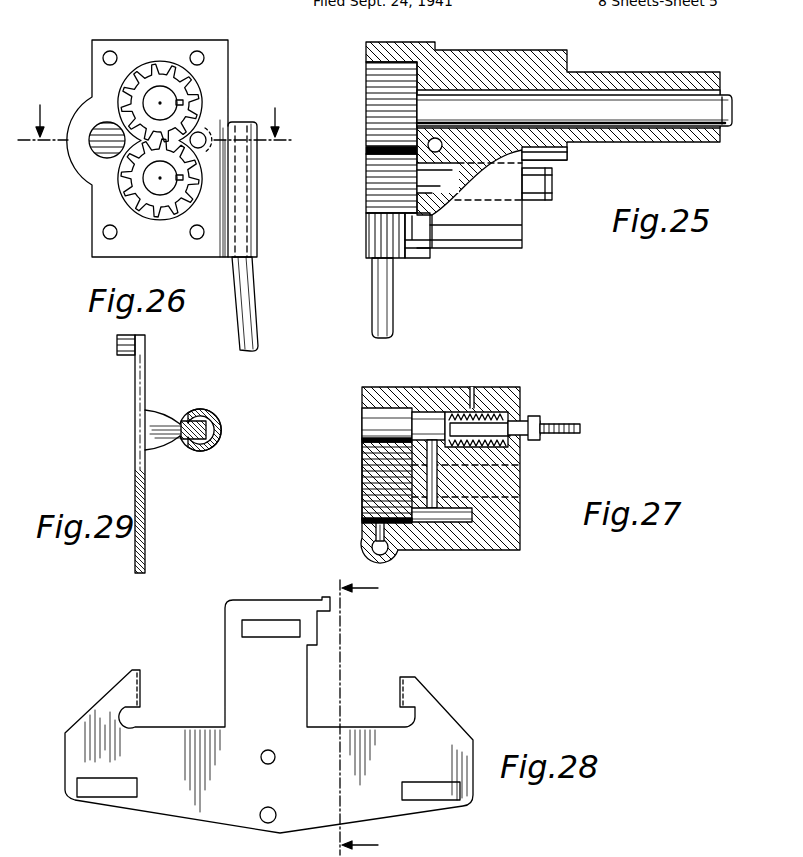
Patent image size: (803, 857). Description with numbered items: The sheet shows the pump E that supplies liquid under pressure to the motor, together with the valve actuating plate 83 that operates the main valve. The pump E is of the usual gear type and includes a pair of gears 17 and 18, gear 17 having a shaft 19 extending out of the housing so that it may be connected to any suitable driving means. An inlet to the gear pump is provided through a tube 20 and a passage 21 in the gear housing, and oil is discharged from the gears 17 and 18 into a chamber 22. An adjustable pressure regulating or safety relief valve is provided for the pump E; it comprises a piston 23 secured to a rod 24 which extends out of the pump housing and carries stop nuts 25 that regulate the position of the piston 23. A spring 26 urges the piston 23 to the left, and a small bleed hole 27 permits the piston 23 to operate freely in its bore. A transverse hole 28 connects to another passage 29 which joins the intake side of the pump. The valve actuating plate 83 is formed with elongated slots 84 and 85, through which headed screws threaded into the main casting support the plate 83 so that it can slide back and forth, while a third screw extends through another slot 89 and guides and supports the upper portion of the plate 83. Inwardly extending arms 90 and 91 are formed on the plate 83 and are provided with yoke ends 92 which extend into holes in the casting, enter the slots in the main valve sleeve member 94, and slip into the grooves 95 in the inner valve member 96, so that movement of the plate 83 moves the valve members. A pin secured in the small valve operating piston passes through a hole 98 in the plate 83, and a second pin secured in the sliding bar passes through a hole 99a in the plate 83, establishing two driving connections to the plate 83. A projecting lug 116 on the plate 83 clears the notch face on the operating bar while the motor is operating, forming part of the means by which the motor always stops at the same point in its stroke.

In FIG. 25, the pump E is at (460, 60).
In FIG. 26, the gear 17 is at (172, 76).
In FIG. 25, the gear 17 is at (380, 88).
In FIG. 26, the gear 18 is at (196, 160).
In FIG. 25, the gear 18 is at (366, 178).
In FIG. 27, the gear 18 is at (385, 462).
In FIG. 25, the shaft 19 is at (705, 110).
In FIG. 26, the tube 20 is at (250, 300).
In FIG. 25, the tube 20 is at (385, 299).
In FIG. 26, the passage 21 is at (238, 200).
In FIG. 27, the passage 21 is at (383, 555).
In FIG. 26, the chamber 22 is at (106, 142).
In FIG. 27, the chamber 22 is at (383, 406).
In FIG. 27, the piston 23 is at (428, 418).
In FIG. 27, the rod 24 is at (497, 426).
In FIG. 27, the stop nuts 25 is at (530, 438).
In FIG. 27, the spring 26 is at (505, 420).
In FIG. 26, the bleed hole 27 is at (154, 122).
In FIG. 27, the bleed hole 27 is at (472, 402).
In FIG. 25, the transverse hole 28 is at (366, 150).
In FIG. 27, the transverse hole 28 is at (427, 484).
In FIG. 26, the passage 29 is at (201, 137).
In FIG. 27, the passage 29 is at (440, 515).
In FIG. 28, the passage 29 is at (359, 717).
In FIG. 29, the valve actuating plate 83 is at (148, 526).
In FIG. 28, the valve actuating plate 83 is at (356, 735).
In FIG. 28, the elongated slot 84 is at (106, 786).
In FIG. 28, the elongated slot 85 is at (424, 790).
In FIG. 28, the slot 89 is at (270, 626).
In FIG. 29, the arm 90 is at (158, 438).
In FIG. 28, the arm 90 is at (142, 674).
In FIG. 28, the arm 91 is at (400, 680).
In FIG. 29, the yoke end 92 is at (194, 411).
In FIG. 29, the main valve sleeve member 94 is at (218, 424).
In FIG. 29, the groove 95 is at (200, 446).
In FIG. 29, the inner valve member 96 is at (218, 440).
In FIG. 28, the hole 98 is at (276, 756).
In FIG. 28, the hole 99a is at (274, 811).
In FIG. 29, the projecting lug 116 is at (121, 350).
In FIG. 28, the projecting lug 116 is at (330, 604).